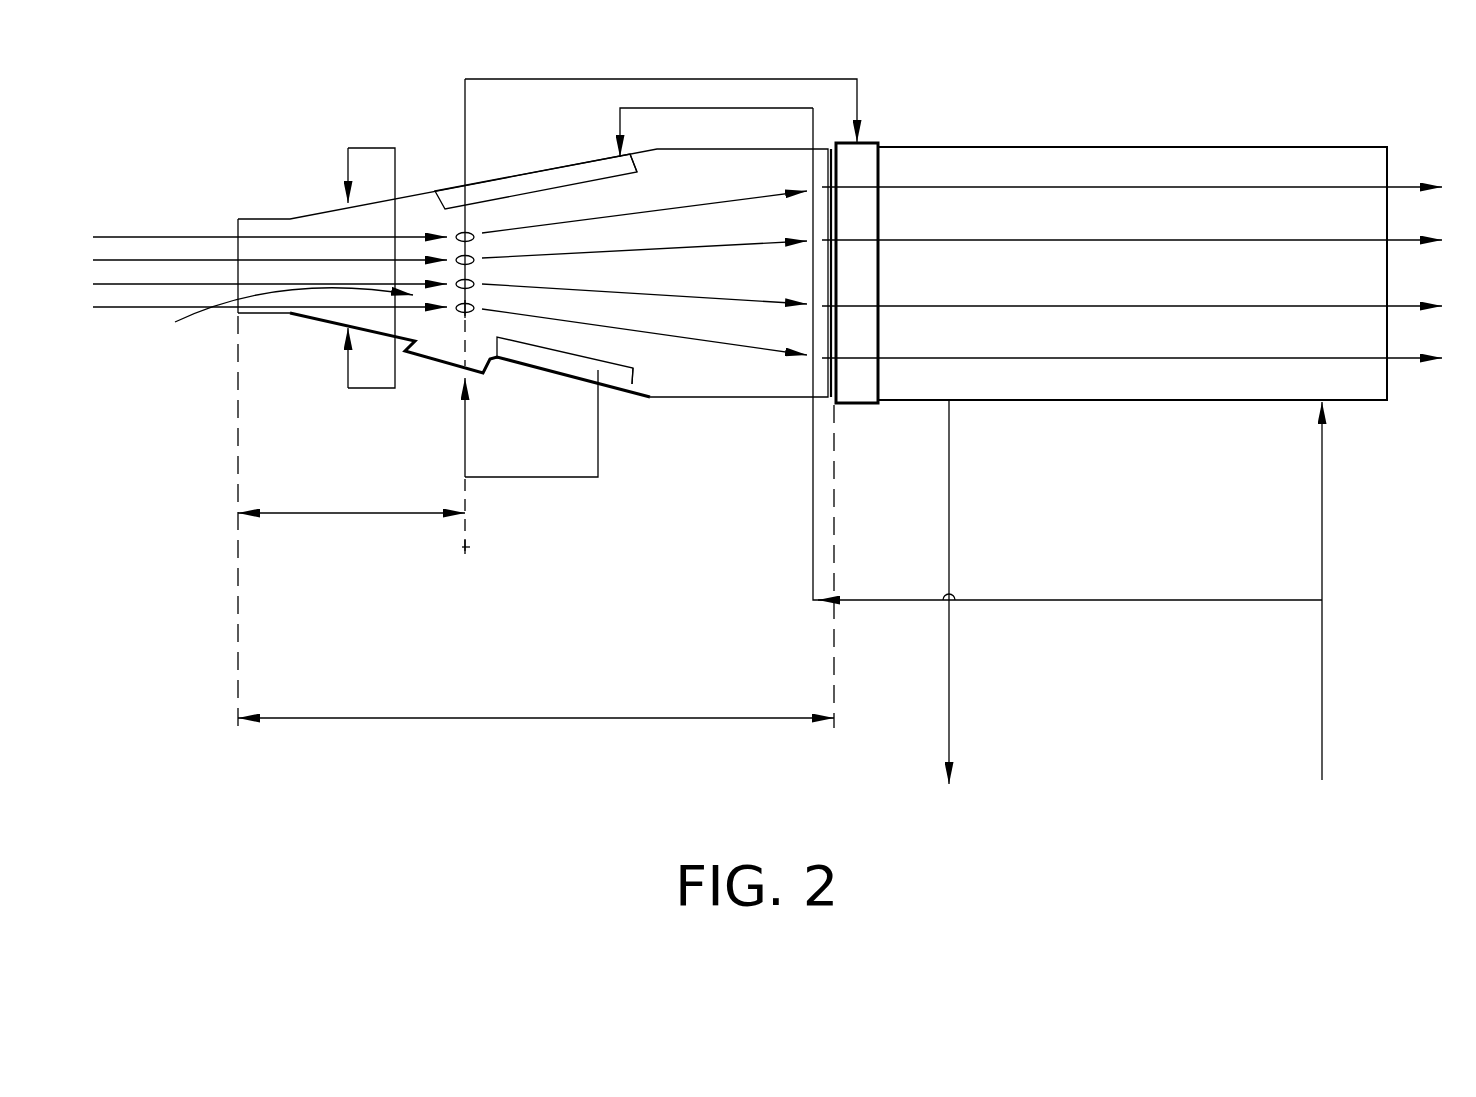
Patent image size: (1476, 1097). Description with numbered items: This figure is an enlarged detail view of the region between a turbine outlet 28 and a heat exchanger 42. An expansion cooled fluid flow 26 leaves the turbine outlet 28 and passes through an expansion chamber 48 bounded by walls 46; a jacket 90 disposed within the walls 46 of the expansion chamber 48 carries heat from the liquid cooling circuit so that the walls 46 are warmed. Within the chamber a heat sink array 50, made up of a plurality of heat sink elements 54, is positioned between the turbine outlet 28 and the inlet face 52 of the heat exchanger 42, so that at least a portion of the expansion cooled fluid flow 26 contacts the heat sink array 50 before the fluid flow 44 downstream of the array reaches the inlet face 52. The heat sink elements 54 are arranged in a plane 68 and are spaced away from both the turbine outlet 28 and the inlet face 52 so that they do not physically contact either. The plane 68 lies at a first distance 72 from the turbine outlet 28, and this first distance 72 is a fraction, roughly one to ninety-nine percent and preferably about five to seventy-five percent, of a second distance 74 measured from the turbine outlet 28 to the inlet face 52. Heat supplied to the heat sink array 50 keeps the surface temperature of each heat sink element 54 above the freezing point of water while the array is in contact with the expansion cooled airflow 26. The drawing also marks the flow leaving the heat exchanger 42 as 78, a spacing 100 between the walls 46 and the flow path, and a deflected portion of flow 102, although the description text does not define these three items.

The expansion cooled fluid flow 26 is at (491, 439).
The turbine outlet 28 is at (258, 318).
The heat exchanger 42 is at (1113, 153).
The fluid flow after heat sink array 44 is at (652, 293).
The walls 46 is at (440, 190).
The expansion chamber 48 is at (590, 390).
The heat sink array 50 is at (482, 224).
The inlet face 52 is at (835, 273).
The heat sink element 54 is at (457, 320).
The plane 68 is at (470, 547).
The first distance 72 is at (352, 512).
The second distance 74 is at (537, 718).
The output beams 78 is at (1388, 168).
The jacket 90 is at (634, 166).
The plate spacing 100 is at (370, 148).
The deflected beam 102 is at (265, 316).